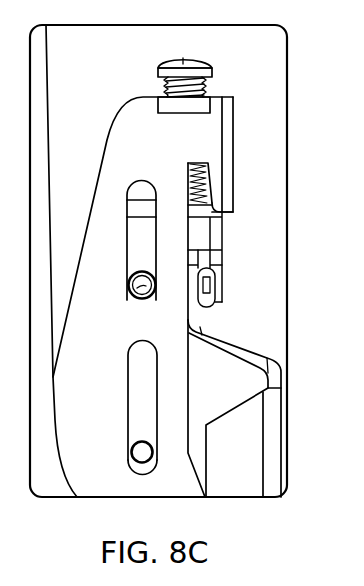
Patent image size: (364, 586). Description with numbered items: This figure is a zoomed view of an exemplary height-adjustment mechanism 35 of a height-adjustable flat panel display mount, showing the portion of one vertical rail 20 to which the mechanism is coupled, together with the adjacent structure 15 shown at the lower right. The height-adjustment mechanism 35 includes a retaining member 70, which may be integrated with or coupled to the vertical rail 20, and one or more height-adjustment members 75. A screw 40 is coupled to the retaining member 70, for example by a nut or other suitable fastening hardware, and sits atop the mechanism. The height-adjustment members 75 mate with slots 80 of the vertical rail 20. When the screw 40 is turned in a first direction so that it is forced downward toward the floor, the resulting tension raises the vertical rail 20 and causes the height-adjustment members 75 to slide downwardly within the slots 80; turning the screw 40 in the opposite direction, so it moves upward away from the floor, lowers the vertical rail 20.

The rail bar 15 is at (253, 383).
The vertical rail 20 is at (133, 130).
The height-adjustment mechanism 35 is at (244, 264).
The screw 40 is at (147, 71).
The retaining member 70 is at (217, 240).
The height-adjustment member 75 is at (129, 304).
The slot 80 is at (135, 415).